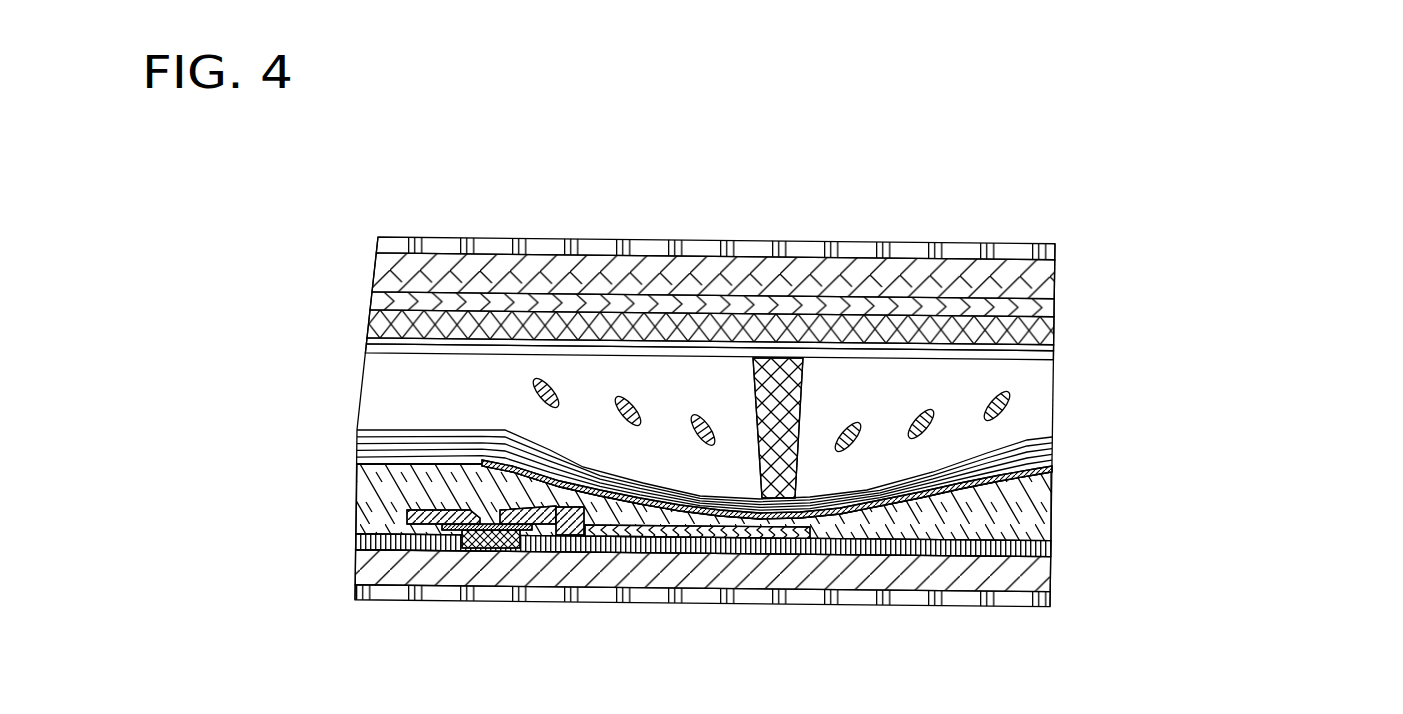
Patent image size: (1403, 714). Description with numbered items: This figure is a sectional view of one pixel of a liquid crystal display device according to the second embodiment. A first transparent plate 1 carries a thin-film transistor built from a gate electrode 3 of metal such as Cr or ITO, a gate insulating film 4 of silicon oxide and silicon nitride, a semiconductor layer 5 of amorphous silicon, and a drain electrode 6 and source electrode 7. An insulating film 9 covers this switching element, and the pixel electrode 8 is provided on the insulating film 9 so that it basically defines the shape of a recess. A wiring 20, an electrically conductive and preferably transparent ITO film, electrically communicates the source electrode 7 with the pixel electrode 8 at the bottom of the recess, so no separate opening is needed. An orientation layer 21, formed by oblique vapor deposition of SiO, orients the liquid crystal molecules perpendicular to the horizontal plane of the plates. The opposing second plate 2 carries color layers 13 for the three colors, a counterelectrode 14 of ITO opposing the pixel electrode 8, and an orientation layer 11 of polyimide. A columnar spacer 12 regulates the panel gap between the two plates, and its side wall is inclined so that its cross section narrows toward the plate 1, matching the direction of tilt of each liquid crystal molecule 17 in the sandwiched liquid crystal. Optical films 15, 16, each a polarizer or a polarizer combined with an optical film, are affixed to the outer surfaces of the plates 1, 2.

The plate 1 is at (1033, 580).
The plate 2 is at (1033, 285).
The gate electrode 3 is at (494, 549).
The gate insulating film 4 is at (1040, 545).
The semiconductor layer 5 is at (412, 548).
The drain electrode 6 is at (362, 536).
The source electrode 7 is at (572, 521).
The pixel electrode 8 is at (1050, 473).
The insulating film 9 is at (1033, 518).
The orientation layer 11 is at (1042, 360).
The columnar spacer 12 is at (778, 368).
The color layers 13 is at (1030, 305).
The counterelectrode 14 is at (1043, 340).
The optical film 15 is at (951, 601).
The optical film 16 is at (1053, 247).
The liquid crystal molecule 17 is at (1010, 402).
The wiring 20 is at (770, 536).
The orientation layer 21 is at (358, 456).